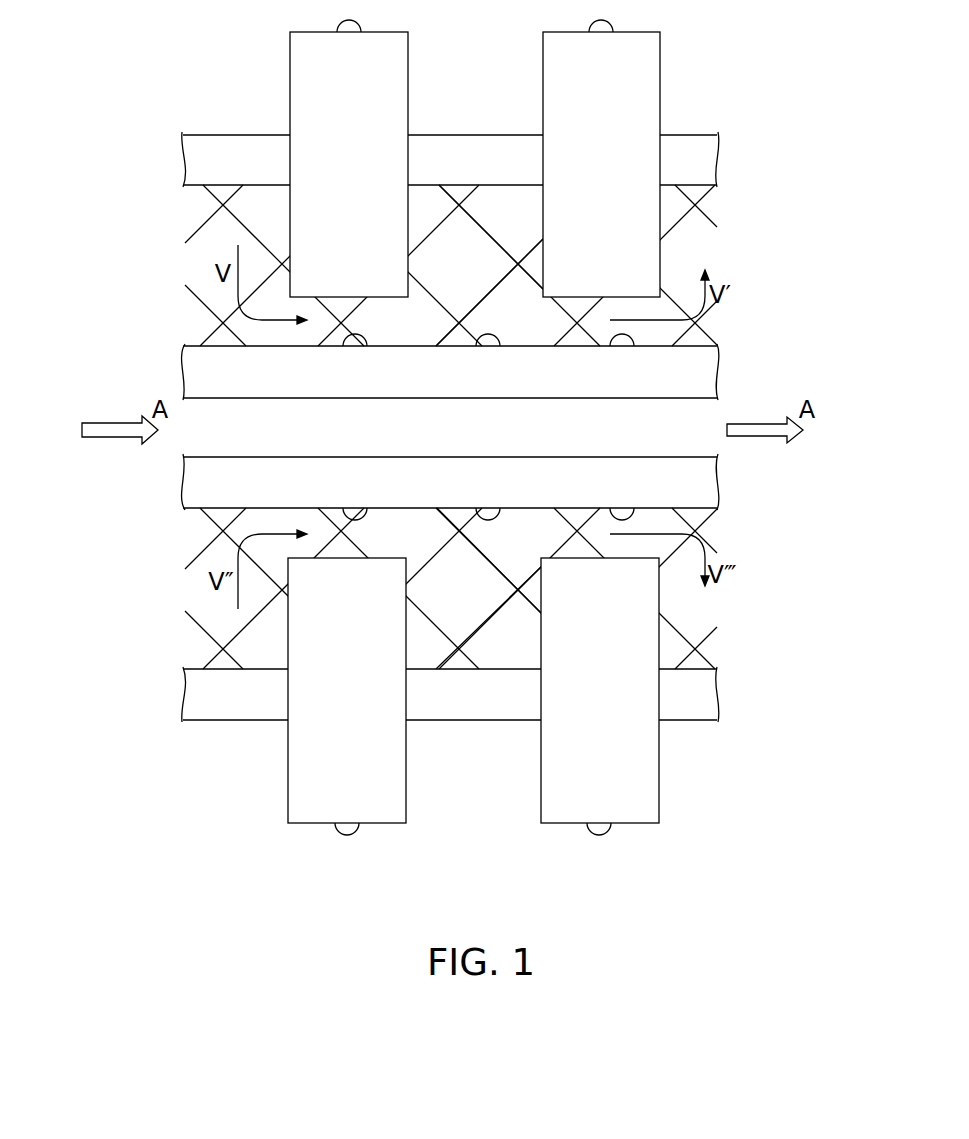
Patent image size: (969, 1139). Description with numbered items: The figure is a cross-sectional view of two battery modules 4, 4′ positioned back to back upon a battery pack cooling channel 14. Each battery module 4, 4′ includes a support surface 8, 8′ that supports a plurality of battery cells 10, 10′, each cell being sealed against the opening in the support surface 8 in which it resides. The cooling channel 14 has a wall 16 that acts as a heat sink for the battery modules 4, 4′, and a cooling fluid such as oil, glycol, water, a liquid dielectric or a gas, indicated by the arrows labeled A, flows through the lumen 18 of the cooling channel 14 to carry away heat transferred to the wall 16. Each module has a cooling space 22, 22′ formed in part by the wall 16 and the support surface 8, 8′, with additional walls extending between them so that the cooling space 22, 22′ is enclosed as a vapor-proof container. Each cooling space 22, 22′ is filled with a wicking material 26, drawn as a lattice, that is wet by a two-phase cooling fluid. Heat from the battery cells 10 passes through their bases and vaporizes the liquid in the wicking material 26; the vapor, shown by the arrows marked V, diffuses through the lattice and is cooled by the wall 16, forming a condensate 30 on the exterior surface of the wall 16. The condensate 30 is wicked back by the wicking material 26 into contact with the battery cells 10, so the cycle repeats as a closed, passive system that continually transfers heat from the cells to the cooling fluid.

The battery module 4 is at (752, 133).
The battery module 4′ is at (752, 507).
The support surface 8 is at (708, 113).
The support surface 8′ is at (708, 743).
The battery cell 10 is at (338, 70).
The battery cell 10′ is at (590, 70).
The battery pack cooling channel 14 is at (173, 527).
The wall 16 is at (697, 374).
The lumen 18 is at (450, 440).
The cooling space 22 is at (465, 287).
The cooling space 22′ is at (437, 607).
The wicking material 26 is at (485, 231).
The condensate 30 is at (622, 505).